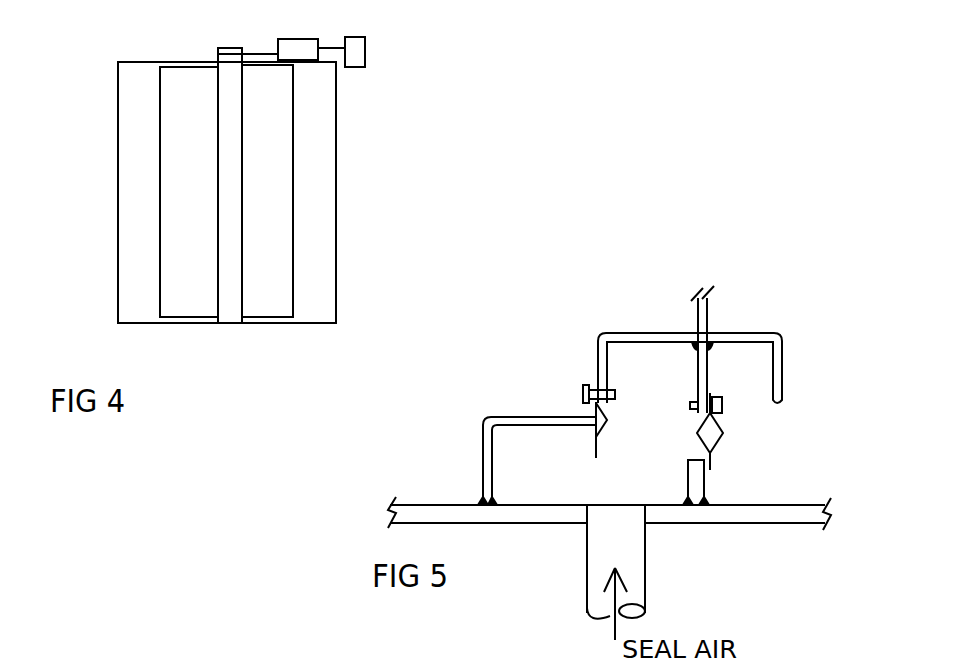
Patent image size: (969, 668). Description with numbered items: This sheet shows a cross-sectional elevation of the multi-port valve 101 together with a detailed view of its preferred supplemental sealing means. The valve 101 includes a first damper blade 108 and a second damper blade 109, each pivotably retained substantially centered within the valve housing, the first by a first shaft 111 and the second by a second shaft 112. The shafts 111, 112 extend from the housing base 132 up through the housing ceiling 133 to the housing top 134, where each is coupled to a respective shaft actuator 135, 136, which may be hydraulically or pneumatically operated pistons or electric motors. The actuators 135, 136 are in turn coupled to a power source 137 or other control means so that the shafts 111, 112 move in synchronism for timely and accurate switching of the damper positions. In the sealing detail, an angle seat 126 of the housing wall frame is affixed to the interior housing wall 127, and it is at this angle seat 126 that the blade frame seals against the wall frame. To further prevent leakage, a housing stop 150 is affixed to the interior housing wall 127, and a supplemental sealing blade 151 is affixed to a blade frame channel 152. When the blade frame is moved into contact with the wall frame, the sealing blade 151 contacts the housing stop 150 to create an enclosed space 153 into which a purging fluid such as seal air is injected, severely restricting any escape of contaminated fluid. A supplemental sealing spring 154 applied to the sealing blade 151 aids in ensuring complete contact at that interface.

In FIG. 4, the valve 101 is at (422, 48).
In FIG. 4, the first damper blade 108 is at (165, 192).
In FIG. 4, the second damper blade 109 is at (288, 192).
In FIG. 4, the first shaft 111 is at (228, 323).
In FIG. 4, the second shaft 112 is at (230, 185).
In FIG. 4, the interior housing wall 127 is at (337, 281).
In FIG. 5, the interior housing wall 127 is at (783, 507).
In FIG. 4, the housing base 132 is at (143, 323).
In FIG. 4, the housing ceiling 133 is at (138, 62).
In FIG. 4, the housing top 134 is at (182, 62).
In FIG. 4, the shaft actuator 135 is at (281, 40).
In FIG. 4, the shaft actuator 136 is at (298, 49).
In FIG. 4, the power source 137 is at (355, 67).
In FIG. 5, the angle seat 126 is at (543, 415).
In FIG. 5, the housing stop 150 is at (688, 481).
In FIG. 5, the supplemental sealing blade 151 is at (708, 370).
In FIG. 5, the blade frame channel 152 is at (634, 333).
In FIG. 5, the enclosed space 153 is at (535, 481).
In FIG. 5, the supplemental sealing spring 154 is at (698, 440).